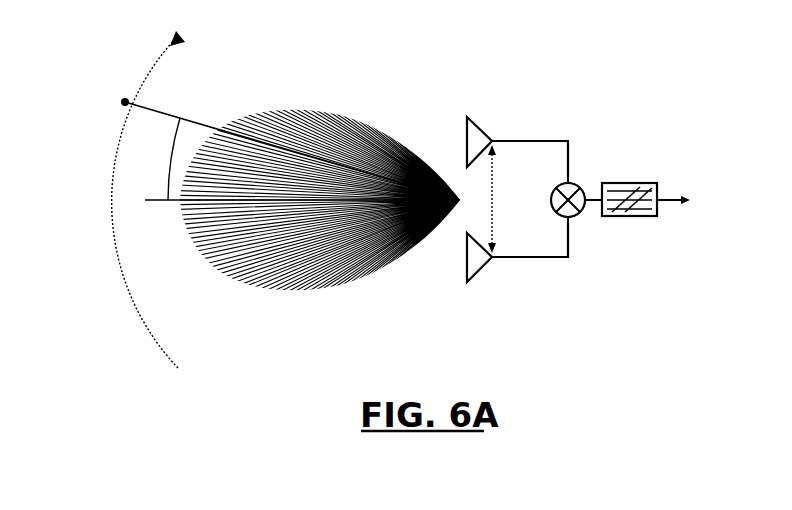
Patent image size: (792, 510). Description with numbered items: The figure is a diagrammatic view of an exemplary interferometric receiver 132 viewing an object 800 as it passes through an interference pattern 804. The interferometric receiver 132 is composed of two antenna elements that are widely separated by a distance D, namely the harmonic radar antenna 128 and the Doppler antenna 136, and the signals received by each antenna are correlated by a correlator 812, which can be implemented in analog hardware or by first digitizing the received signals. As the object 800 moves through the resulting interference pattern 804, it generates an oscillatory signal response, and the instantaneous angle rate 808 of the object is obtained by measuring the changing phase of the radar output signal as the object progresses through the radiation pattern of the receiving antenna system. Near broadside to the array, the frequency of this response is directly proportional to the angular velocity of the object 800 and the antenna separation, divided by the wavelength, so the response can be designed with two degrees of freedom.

The object 800 is at (122, 102).
The interference pattern 804 is at (284, 107).
The angle rate 808 is at (170, 168).
The harmonic radar antenna 128 is at (464, 126).
The Doppler antenna 136 is at (466, 274).
The interferometric receiver 132 is at (663, 75).
The correlator 812 is at (632, 216).